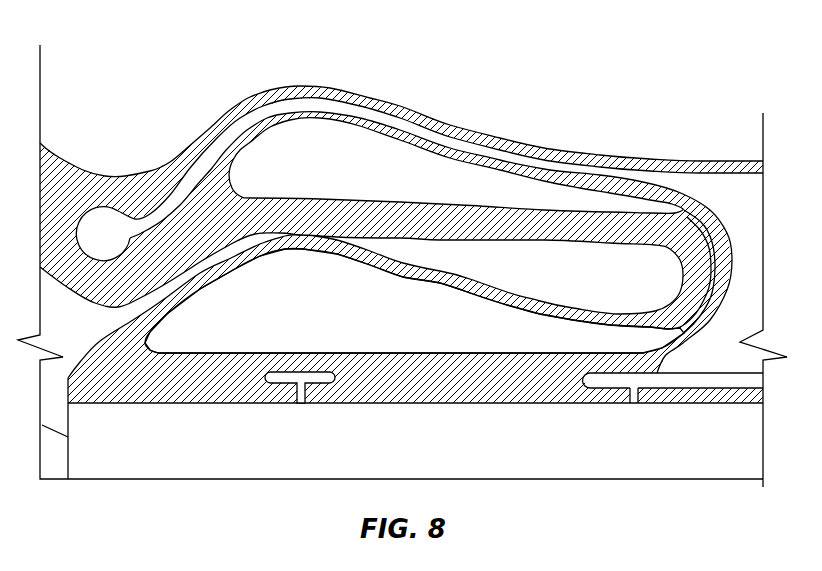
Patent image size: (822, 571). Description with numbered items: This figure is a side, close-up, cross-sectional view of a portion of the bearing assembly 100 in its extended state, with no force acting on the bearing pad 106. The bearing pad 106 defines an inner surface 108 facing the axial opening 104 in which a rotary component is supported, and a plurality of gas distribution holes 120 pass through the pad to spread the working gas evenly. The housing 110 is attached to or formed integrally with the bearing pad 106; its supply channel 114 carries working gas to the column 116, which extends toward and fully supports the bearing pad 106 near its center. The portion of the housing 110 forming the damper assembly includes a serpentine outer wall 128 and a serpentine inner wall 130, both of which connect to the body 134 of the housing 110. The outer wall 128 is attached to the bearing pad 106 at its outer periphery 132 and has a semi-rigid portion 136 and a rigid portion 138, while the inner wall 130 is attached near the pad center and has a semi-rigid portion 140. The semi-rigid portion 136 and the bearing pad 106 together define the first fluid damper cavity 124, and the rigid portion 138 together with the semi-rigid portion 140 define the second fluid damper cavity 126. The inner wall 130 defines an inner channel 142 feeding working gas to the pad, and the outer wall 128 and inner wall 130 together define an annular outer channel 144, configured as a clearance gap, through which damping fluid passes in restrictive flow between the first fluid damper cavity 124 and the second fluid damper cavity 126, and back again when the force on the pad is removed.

The bearing assembly 100 is at (414, 283).
The axial opening 104 is at (92, 456).
The bearing pad 106 is at (243, 384).
The inner surface 108 is at (667, 408).
The housing 110 is at (425, 290).
The supply channel 114 is at (361, 115).
The column 116 is at (770, 311).
The gas distribution holes 120 is at (300, 413).
The first fluid damper cavity 124 is at (306, 334).
The second fluid damper cavity 126 is at (306, 192).
The outer wall 128 is at (548, 298).
The inner wall 130 is at (462, 196).
The outer periphery 132 is at (107, 364).
The body 134 is at (85, 192).
The semi-rigid portion 136 is at (281, 249).
The rigid portion 138 is at (502, 205).
The semi-rigid portion 140 is at (426, 137).
The inner channel 142 is at (746, 260).
The outer channel 144 is at (724, 245).